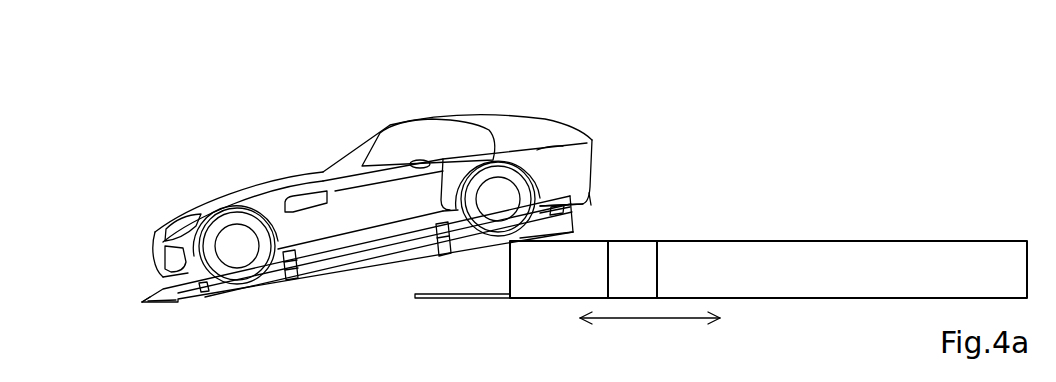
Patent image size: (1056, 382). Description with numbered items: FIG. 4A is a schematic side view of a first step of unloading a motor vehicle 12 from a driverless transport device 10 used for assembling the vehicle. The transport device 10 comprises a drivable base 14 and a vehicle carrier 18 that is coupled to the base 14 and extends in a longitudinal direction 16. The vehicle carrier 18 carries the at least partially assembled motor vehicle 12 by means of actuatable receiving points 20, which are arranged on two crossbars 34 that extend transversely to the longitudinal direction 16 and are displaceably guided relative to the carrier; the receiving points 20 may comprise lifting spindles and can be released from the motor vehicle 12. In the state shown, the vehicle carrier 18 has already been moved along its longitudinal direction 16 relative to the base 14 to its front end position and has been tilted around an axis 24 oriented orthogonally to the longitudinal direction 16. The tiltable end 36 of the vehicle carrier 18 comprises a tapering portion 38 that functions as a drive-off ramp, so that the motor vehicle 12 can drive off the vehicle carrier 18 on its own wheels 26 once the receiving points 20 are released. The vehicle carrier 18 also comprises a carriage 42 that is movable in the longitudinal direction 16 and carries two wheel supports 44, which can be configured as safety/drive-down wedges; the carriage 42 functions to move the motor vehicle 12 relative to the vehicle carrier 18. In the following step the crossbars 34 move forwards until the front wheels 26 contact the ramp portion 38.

The transport device 10 is at (862, 125).
The motor vehicle 12 is at (432, 104).
The drivable base 14 is at (824, 300).
The longitudinal direction 16 is at (631, 319).
The vehicle carrier 18 is at (317, 268).
The receiving points 20 is at (290, 279).
The axis 24 is at (482, 268).
The wheels 26 is at (243, 278).
The crossbars 34 is at (273, 345).
The tiltable end 36 is at (124, 318).
The tapering portion 38 is at (160, 298).
The carriage 42 is at (590, 206).
The wheel supports 44 is at (610, 211).